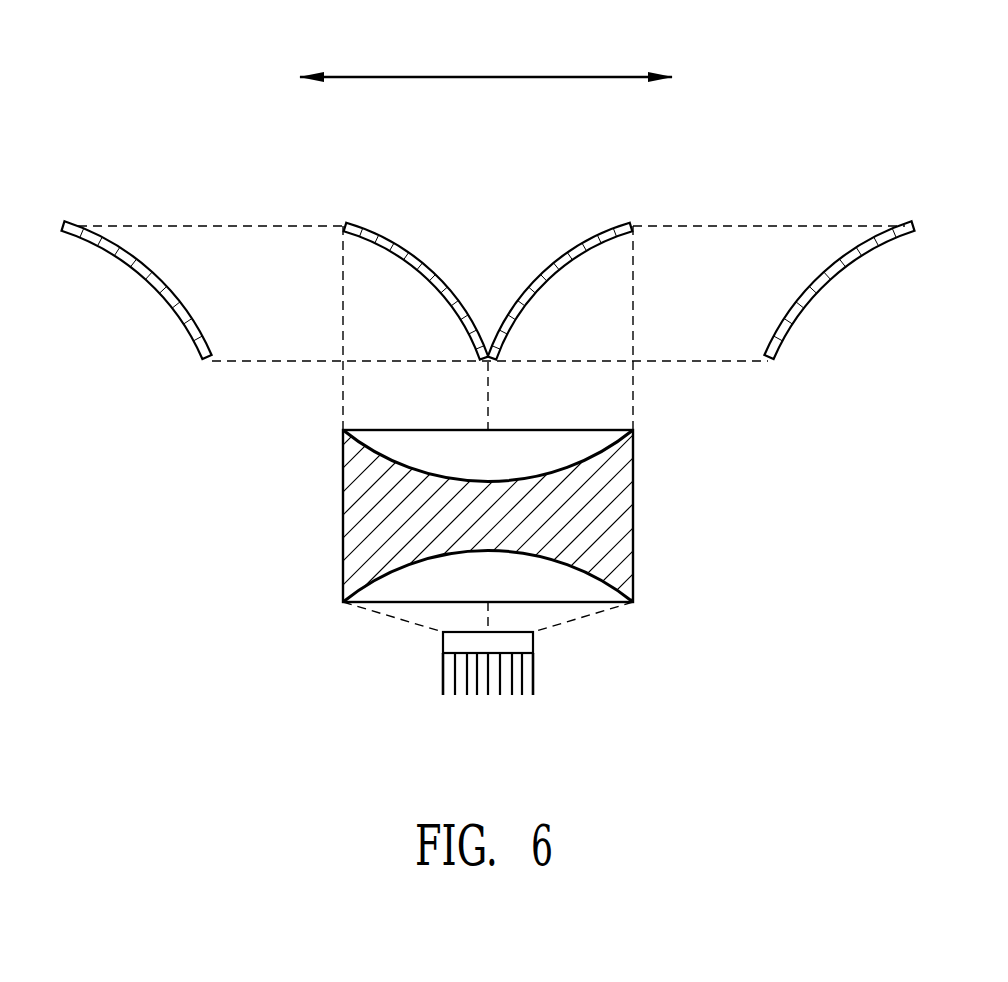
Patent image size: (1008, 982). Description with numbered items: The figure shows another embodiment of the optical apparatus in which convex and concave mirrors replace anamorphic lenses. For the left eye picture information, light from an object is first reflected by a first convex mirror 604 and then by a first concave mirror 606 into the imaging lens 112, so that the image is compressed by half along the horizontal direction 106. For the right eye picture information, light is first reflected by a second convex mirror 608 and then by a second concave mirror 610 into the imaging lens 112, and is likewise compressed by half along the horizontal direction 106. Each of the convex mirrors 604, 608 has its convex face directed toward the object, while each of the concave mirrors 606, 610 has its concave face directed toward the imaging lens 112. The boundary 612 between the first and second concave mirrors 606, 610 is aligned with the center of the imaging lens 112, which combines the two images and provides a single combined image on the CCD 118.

The horizontal direction 106 is at (488, 76).
The first convex mirror 604 is at (147, 285).
The first concave mirror 606 is at (400, 243).
The second concave mirror 610 is at (575, 243).
The second convex mirror 608 is at (827, 283).
The boundary 612 is at (490, 366).
The imaging lens 112 is at (633, 552).
The CCD 118 is at (533, 645).